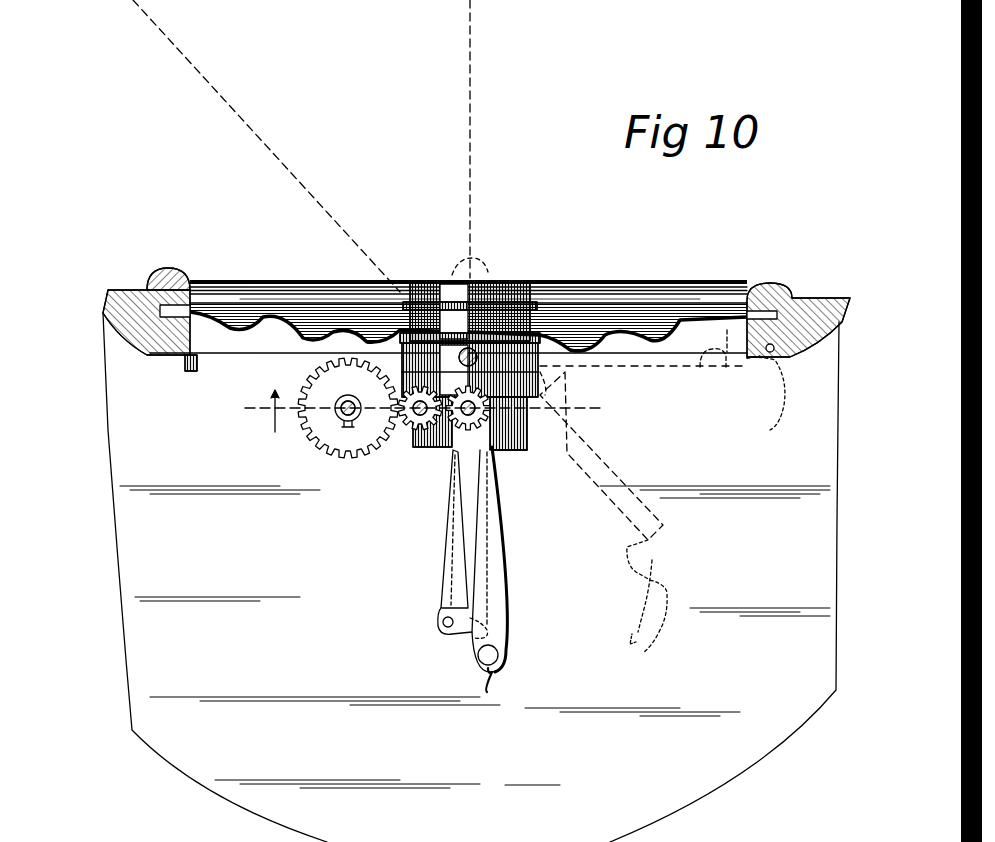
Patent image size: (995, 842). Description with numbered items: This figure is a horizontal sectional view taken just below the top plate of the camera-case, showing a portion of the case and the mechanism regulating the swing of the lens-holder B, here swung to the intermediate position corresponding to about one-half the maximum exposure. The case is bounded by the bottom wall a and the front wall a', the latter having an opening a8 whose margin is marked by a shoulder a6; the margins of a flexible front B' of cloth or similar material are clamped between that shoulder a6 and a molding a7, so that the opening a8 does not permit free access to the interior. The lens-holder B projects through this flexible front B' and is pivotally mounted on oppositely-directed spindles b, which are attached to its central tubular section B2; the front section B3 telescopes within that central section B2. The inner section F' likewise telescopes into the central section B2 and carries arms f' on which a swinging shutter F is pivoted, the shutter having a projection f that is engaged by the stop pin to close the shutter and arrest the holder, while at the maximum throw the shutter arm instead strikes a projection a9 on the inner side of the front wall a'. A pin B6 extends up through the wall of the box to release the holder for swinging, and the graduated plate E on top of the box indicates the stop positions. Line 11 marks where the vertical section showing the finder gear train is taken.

The bottom wall a is at (471, 577).
The front wall a' is at (798, 297).
The shoulder a6 is at (152, 285).
The molding a7 is at (170, 288).
The opening a8 is at (293, 342).
The projection a9 is at (190, 372).
The spindles b is at (466, 347).
The lens-holder B is at (438, 439).
The flexible front B' is at (308, 385).
The central tubular section B2 is at (552, 382).
The front section B3 is at (510, 285).
The pin B6 is at (762, 366).
The plate E is at (490, 546).
The swinging shutter F is at (446, 606).
The inner section F' is at (513, 471).
The projection f is at (635, 520).
The arms f' is at (435, 529).
The section line 11 11 is at (410, 411).